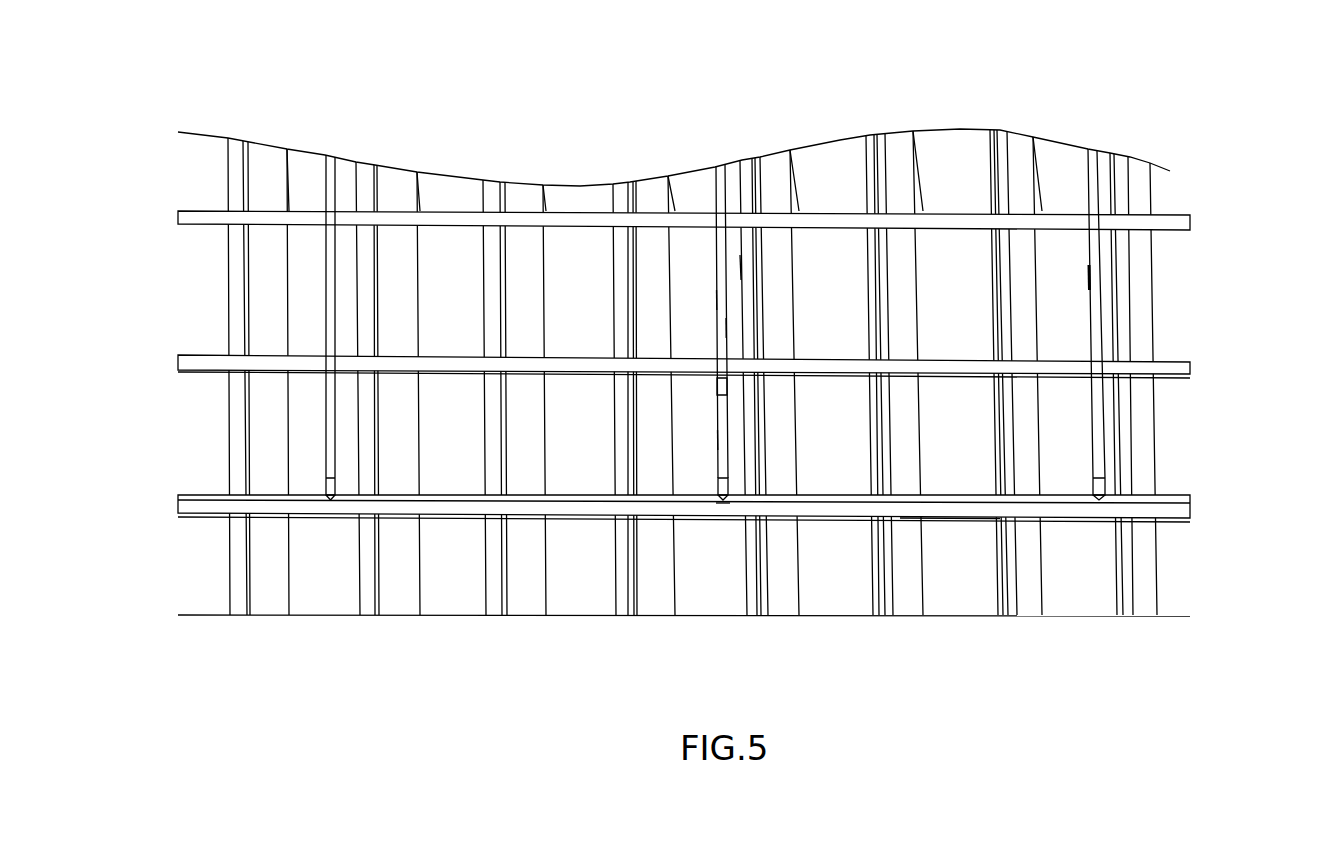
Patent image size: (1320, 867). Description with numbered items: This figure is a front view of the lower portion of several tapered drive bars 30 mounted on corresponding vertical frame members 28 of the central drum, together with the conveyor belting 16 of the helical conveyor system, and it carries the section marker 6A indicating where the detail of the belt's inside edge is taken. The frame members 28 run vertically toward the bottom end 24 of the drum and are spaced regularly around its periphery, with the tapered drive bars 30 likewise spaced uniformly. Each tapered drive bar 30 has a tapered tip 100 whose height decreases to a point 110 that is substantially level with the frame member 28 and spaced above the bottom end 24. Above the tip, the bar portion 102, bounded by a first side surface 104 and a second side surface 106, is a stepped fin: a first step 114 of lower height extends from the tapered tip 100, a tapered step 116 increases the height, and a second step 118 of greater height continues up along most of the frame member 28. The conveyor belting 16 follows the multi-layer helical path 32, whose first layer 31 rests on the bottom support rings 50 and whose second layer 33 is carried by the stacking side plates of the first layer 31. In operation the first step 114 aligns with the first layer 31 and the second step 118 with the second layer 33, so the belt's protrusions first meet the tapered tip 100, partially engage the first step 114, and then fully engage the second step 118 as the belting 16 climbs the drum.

The conveyor belting 16 is at (938, 518).
The bottom end 24 is at (799, 616).
The frame members 28 is at (308, 160).
The tapered drive bar 30 is at (332, 163).
The first layer 31 is at (1182, 515).
The multi-layer helical path 32 is at (1168, 155).
The second layer 33 is at (1183, 362).
The bottom support rings 50 is at (1178, 523).
The tapered tip 100 is at (728, 500).
The bar portion 102 is at (735, 268).
The first side surface 104 is at (717, 347).
The second side surface 106 is at (727, 328).
The point 110 is at (723, 513).
The first step 114 is at (725, 440).
The tapered step 116 is at (727, 387).
The second step 118 is at (722, 299).
The section line 6A is at (811, 497).